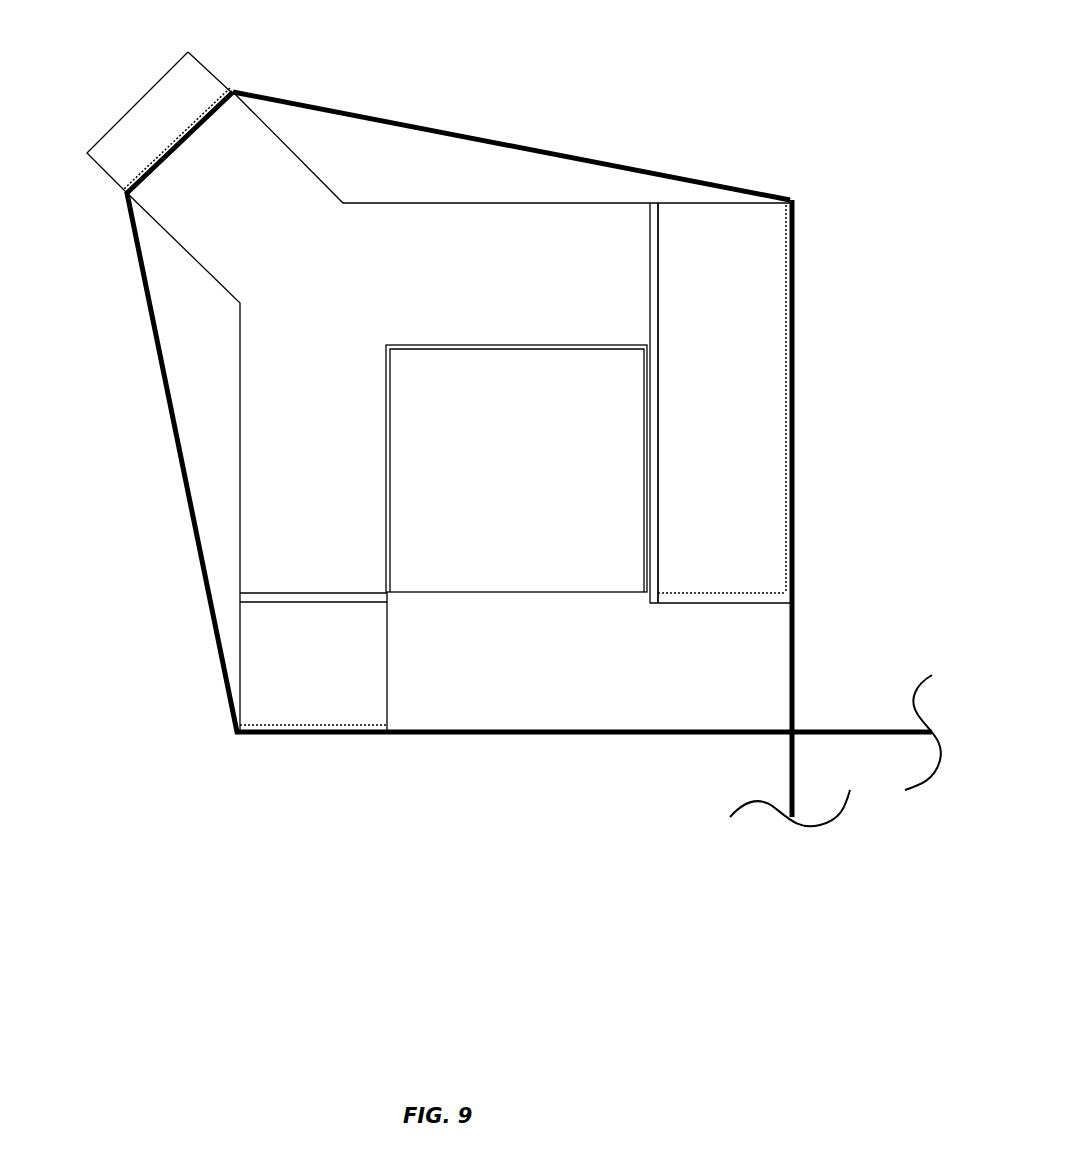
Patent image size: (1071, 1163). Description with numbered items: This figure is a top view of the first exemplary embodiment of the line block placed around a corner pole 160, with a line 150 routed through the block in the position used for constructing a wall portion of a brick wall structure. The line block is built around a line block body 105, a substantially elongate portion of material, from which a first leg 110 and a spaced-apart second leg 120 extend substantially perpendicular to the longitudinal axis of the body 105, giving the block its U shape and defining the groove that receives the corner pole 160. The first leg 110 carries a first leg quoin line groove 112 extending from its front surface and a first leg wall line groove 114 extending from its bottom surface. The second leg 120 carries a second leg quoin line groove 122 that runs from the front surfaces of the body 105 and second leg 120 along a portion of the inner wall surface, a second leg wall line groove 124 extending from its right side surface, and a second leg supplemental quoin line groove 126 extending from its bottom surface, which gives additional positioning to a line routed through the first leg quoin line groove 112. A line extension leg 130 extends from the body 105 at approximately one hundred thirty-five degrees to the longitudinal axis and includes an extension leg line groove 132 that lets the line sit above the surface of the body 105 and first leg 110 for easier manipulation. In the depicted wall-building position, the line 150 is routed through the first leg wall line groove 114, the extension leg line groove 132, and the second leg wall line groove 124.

The line block body 105 is at (492, 227).
The first leg 110 is at (318, 423).
The first leg quoin line groove 112 is at (237, 600).
The first leg wall line groove 114 is at (300, 728).
The second leg 120 is at (757, 408).
The second leg quoin line groove 122 is at (658, 255).
The second leg wall line groove 124 is at (788, 288).
The second leg supplemental quoin line groove 126 is at (757, 595).
The line extension leg 130 is at (242, 152).
The extension leg line groove 132 is at (195, 128).
The line 150 is at (467, 135).
The corner pole 160 is at (575, 560).